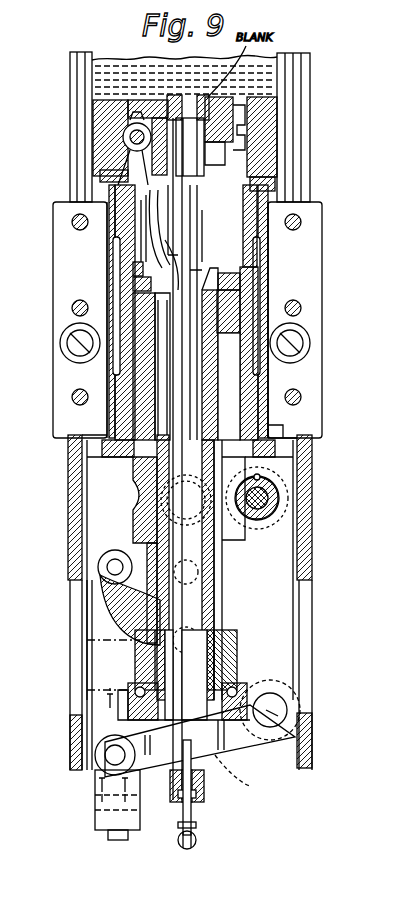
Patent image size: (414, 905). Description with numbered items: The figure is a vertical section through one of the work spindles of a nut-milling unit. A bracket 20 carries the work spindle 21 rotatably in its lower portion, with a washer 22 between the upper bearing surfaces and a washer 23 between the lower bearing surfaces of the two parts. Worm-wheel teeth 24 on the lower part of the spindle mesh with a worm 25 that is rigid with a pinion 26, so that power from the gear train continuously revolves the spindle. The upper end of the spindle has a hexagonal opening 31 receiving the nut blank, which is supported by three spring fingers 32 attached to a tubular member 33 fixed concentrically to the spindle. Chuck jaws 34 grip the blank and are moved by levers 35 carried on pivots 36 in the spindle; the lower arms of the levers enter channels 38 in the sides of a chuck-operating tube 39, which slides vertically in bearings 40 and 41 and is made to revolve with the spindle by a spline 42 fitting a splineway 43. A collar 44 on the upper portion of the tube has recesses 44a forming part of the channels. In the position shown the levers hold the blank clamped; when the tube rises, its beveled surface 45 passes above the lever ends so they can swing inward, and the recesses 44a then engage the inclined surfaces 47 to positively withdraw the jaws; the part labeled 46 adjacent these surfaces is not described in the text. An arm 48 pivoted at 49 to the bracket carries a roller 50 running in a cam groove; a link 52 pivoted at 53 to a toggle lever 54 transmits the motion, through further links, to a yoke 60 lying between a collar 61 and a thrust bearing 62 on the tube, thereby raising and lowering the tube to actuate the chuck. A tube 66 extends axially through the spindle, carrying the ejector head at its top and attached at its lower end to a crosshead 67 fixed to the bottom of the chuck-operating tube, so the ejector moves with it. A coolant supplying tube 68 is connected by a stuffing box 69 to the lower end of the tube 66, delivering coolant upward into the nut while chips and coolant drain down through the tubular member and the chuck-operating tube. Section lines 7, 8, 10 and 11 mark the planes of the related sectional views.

The section line 7- 7 is at (375, 498).
The section line 8- 8 is at (370, 532).
The section line 10- 10 is at (52, 104).
The section line 11- 11 is at (45, 108).
The bracket 20 is at (312, 552).
The work spindle 21 is at (245, 305).
The washer 22 is at (282, 180).
The washer 23 is at (283, 427).
The worm-wheel teeth 24 is at (138, 498).
The worm 25 is at (272, 578).
The pinion 26 is at (312, 460).
The hexagonal opening 31 is at (150, 99).
The spring fingers 32 is at (188, 135).
The tubular member 33 is at (205, 196).
The chuck jaws 34 is at (93, 127).
The levers 35 is at (100, 176).
The pivots 36 is at (128, 139).
The channels 38 is at (146, 318).
The chuck-operating tube 39 is at (222, 390).
The bearing 40 is at (222, 324).
The bearing 41 is at (140, 458).
The spline 42 is at (290, 441).
The splineway 43 is at (215, 565).
The collar 44 is at (240, 276).
The recesses 44a is at (128, 268).
The beveled surface 45 is at (176, 258).
The spring 46 is at (128, 290).
The inclined surfaces 47 is at (130, 256).
The arm 48 is at (148, 790).
The pivot 49 is at (275, 712).
The roller 50 is at (250, 785).
The link 52 is at (95, 660).
The pivot 53 is at (108, 571).
The toggle lever 54 is at (148, 530).
The yoke 60 is at (240, 655).
The collar 61 is at (228, 640).
The thrust bearing 62 is at (240, 680).
The tube 66 is at (205, 252).
The crosshead 67 is at (235, 757).
The coolant supplying tube 68 is at (200, 830).
The stuffing box 69 is at (205, 797).